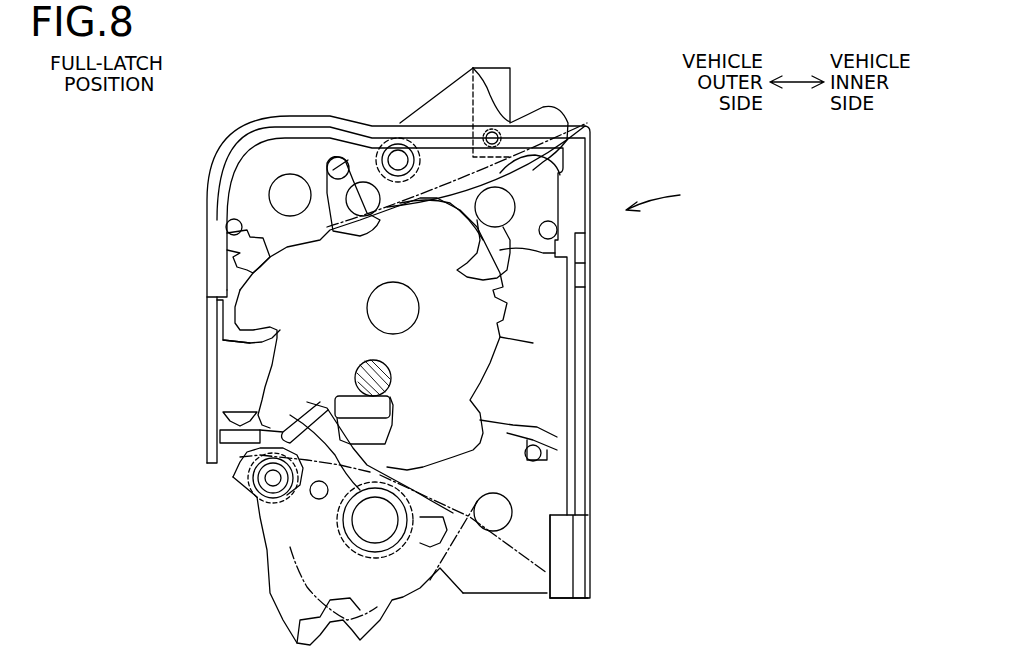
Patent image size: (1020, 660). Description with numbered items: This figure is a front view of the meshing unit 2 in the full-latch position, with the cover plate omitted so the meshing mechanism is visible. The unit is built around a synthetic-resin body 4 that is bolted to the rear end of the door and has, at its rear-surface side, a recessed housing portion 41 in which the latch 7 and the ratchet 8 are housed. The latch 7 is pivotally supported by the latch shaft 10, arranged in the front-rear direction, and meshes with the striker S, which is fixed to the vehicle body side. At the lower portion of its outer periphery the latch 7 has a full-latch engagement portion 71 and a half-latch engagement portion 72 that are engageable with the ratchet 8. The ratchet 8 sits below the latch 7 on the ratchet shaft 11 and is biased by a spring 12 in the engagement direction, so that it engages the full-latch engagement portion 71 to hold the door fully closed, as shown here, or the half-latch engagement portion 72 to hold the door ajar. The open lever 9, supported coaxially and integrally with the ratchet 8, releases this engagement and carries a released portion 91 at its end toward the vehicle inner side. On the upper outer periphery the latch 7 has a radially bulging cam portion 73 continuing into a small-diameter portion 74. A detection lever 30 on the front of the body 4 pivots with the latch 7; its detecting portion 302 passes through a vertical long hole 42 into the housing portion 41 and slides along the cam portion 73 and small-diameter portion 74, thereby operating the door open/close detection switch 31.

The meshing unit 2 is at (699, 204).
The body 4 is at (590, 173).
The latch 7 is at (533, 343).
The ratchet 8 is at (290, 507).
The open lever 9 is at (267, 593).
The latch shaft 10 is at (420, 308).
The ratchet shaft 11 is at (379, 532).
The spring 12 is at (340, 543).
The detection lever 30 is at (400, 123).
The door open/close detection switch 31 is at (512, 95).
The housing portion 41 is at (257, 162).
The long hole 42 is at (330, 200).
The full-latch engagement portion 71 is at (290, 437).
The half-latch engagement portion 72 is at (217, 343).
The cam portion 73 is at (543, 163).
The small-diameter portion 74 is at (333, 170).
The released portion 91 is at (540, 590).
The detecting portion 302 is at (360, 192).
The striker S is at (335, 396).